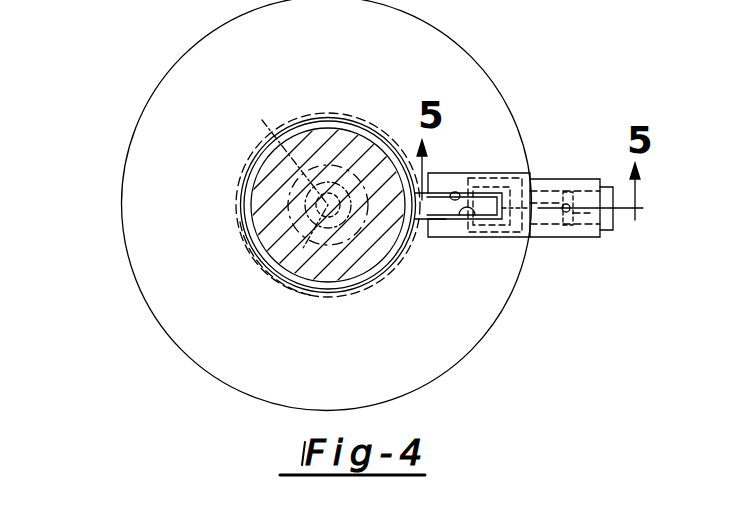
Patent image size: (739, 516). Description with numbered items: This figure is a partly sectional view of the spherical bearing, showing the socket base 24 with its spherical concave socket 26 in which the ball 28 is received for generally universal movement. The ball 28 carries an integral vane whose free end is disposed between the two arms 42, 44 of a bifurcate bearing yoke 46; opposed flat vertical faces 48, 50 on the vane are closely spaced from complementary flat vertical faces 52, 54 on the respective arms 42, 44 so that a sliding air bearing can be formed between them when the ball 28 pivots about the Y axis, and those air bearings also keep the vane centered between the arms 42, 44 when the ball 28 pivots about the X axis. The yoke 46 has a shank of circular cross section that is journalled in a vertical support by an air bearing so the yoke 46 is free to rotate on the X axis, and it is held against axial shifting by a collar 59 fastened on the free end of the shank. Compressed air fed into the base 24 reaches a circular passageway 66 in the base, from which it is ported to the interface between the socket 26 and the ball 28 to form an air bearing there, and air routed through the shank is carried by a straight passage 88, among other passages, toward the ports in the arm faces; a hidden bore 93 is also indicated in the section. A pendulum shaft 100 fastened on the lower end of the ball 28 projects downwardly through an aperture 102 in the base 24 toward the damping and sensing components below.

The socket base 24 is at (471, 352).
The spherical concave socket 26 is at (299, 178).
The ball 28 is at (262, 221).
The arm 42 is at (493, 174).
The arm 44 is at (428, 236).
The bifurcate bearing yoke 46 is at (534, 184).
The flat vertical face 48 is at (452, 192).
The flat vertical face 50 is at (437, 220).
The flat vertical face 52 is at (466, 193).
The flat vertical face 54 is at (478, 219).
The collar 59 is at (613, 225).
The circular passageway 66 is at (236, 176).
The straight passage 88 is at (522, 178).
The hidden bore 93 is at (563, 237).
The pendulum shaft 100 is at (262, 268).
The aperture 102 is at (296, 293).